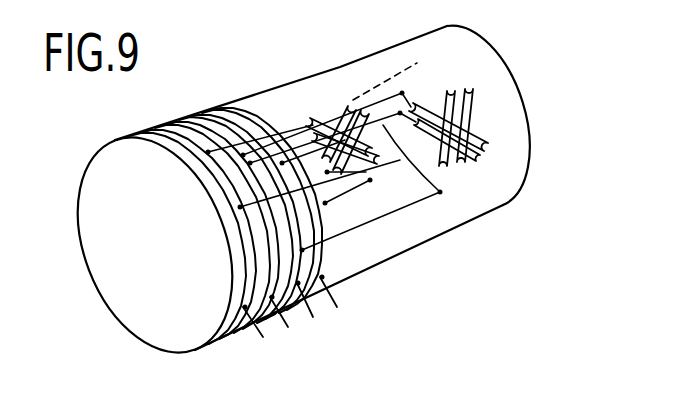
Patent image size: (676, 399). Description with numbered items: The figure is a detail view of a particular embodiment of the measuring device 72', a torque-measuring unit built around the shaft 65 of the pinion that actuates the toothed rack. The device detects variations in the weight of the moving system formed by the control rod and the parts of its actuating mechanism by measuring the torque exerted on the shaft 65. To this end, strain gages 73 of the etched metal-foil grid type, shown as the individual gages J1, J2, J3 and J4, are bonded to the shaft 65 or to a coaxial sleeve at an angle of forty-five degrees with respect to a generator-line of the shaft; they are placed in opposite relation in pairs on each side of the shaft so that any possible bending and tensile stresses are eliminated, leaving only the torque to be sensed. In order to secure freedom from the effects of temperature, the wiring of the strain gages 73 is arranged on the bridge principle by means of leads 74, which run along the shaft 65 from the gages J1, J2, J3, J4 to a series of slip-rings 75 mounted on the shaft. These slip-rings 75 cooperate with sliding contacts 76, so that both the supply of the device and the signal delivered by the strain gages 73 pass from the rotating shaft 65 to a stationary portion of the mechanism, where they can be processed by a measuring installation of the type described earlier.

The shaft 65 is at (403, 238).
The measuring device 72' is at (269, 42).
The strain gages 73 is at (450, 89).
The leads 74 is at (442, 192).
The slip-rings 75 is at (276, 236).
The sliding contacts 76 is at (300, 324).
The strain gauge J1 is at (480, 107).
The strain gauge J2 is at (366, 174).
The strain gauge J3 is at (488, 148).
The strain gauge J4 is at (340, 108).